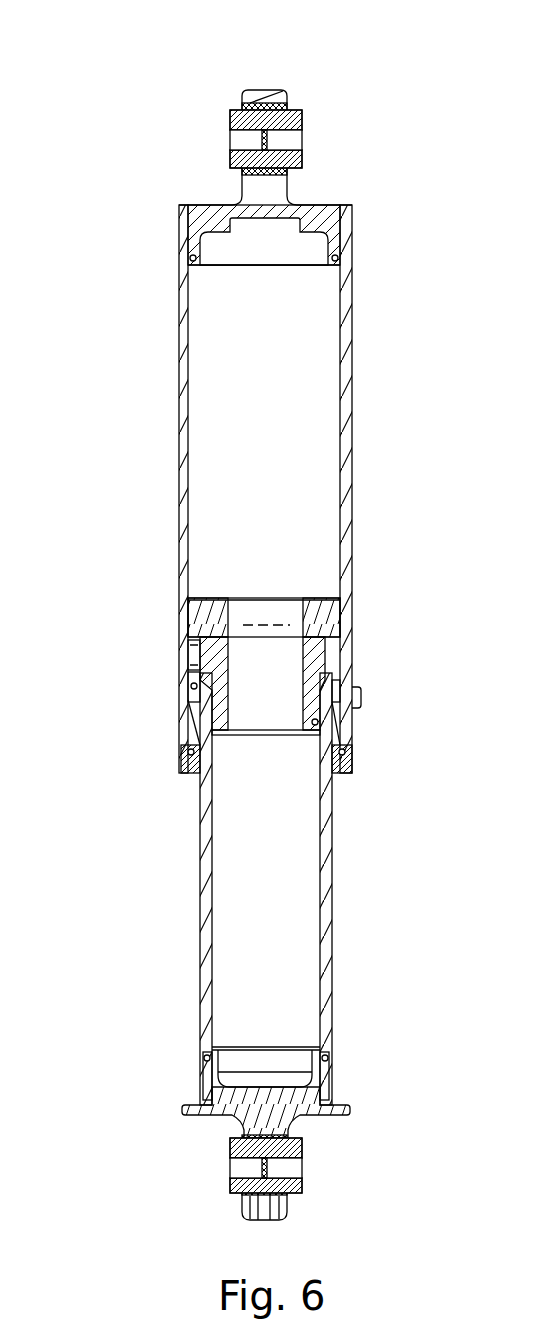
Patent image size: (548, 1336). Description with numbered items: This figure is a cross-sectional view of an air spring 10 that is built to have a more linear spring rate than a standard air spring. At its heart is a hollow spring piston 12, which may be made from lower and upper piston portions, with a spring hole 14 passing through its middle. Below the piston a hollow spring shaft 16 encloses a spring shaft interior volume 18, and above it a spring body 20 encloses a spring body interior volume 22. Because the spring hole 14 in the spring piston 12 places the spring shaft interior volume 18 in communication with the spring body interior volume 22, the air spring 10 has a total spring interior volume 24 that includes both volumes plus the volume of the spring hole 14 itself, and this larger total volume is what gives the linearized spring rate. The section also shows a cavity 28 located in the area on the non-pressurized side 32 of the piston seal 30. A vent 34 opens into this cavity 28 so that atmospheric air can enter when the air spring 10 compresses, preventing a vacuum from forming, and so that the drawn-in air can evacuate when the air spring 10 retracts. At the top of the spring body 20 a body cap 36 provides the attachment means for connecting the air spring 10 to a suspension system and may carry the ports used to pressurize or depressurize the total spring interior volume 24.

The air spring 10 is at (212, 58).
The spring piston 12 is at (180, 655).
The spring hole 14 is at (310, 643).
The spring shaft 16 is at (333, 893).
The spring shaft interior volume 18 is at (278, 923).
The spring body 20 is at (352, 352).
The spring body interior volume 22 is at (282, 488).
The total spring interior volume 24 is at (140, 622).
The cavity 28 is at (338, 692).
The piston seal 30 is at (192, 678).
The non-pressurized side 32 is at (253, 736).
The vent 34 is at (360, 700).
The body cap 36 is at (262, 90).